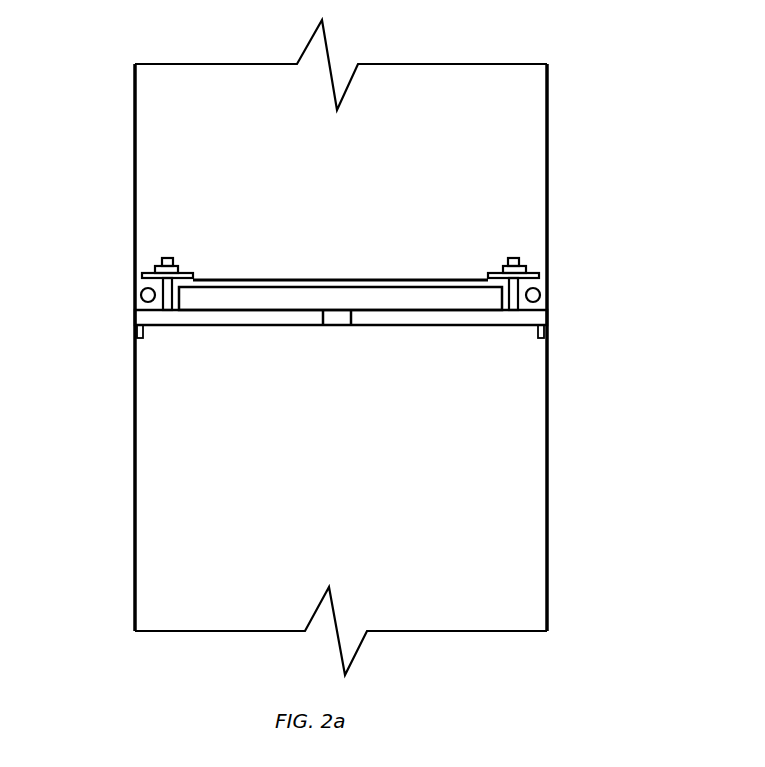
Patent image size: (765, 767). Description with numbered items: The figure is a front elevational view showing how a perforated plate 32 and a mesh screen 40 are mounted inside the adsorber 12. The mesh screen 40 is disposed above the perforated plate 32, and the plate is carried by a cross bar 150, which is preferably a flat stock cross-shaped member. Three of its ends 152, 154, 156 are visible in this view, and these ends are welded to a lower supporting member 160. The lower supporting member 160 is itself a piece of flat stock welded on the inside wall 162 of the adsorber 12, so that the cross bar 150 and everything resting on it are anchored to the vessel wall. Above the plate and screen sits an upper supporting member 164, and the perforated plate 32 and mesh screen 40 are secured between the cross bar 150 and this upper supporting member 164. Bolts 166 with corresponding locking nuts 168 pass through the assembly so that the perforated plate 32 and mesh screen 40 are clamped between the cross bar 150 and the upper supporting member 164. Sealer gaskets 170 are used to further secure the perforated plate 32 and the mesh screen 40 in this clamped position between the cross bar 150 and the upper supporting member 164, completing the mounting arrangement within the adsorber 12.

The adsorber 12 is at (553, 97).
The perforated plate 32 is at (438, 298).
The mesh screen 40 is at (303, 280).
The cross bar 150 is at (275, 317).
The end 152 is at (533, 327).
The end 154 is at (334, 315).
The end 156 is at (145, 327).
The lower supporting member 160 is at (137, 332).
The inside wall 162 is at (137, 475).
The upper supporting member 164 is at (143, 275).
The bolt 166 is at (167, 258).
The locking nut 168 is at (158, 268).
The sealer gasket 170 is at (140, 293).